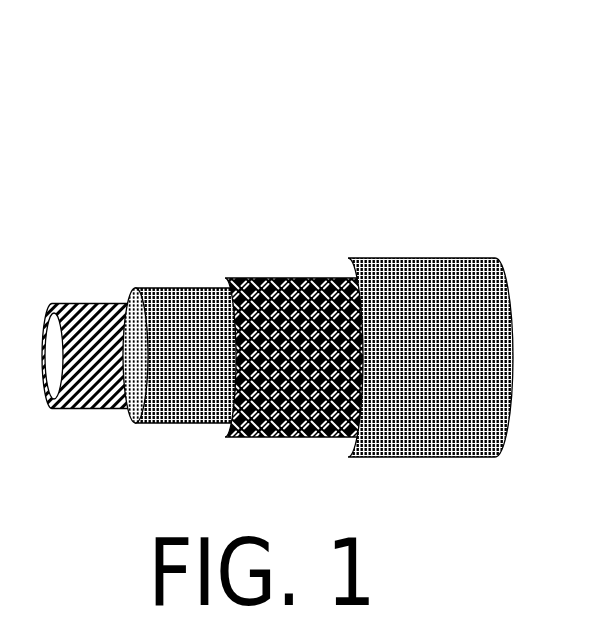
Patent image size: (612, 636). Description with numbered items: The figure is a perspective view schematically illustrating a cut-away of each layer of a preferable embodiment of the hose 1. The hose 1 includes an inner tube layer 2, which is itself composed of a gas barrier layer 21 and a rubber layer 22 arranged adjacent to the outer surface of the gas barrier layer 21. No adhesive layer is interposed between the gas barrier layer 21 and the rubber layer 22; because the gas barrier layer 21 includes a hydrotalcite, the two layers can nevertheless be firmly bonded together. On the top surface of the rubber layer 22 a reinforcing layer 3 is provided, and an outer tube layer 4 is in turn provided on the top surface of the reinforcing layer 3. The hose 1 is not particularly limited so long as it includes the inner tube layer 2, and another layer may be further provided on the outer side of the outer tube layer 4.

The hose 1 is at (277, 259).
The inner tube layer 2 is at (141, 299).
The gas barrier layer 21 is at (95, 318).
The rubber layer 22 is at (181, 322).
The reinforcing layer 3 is at (280, 436).
The outer tube layer 4 is at (418, 270).